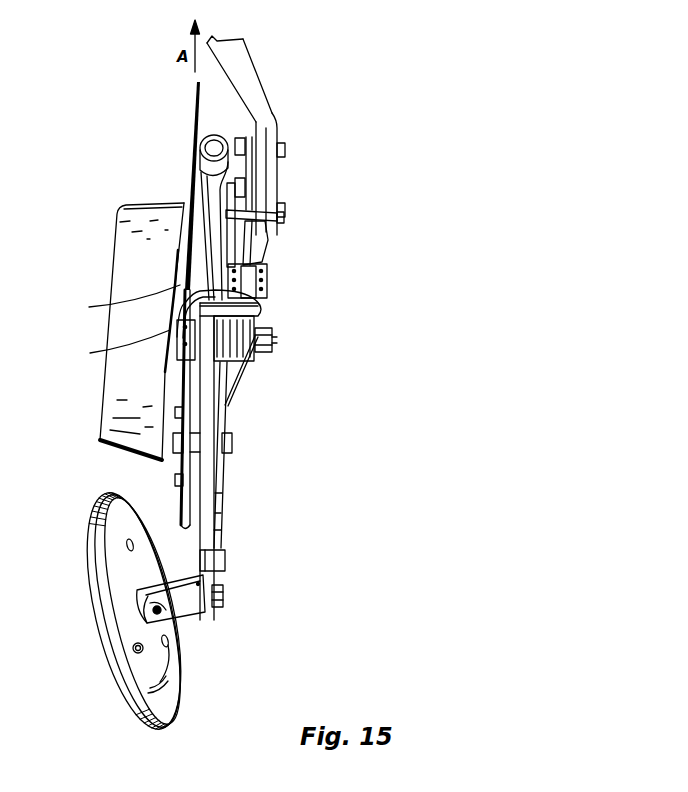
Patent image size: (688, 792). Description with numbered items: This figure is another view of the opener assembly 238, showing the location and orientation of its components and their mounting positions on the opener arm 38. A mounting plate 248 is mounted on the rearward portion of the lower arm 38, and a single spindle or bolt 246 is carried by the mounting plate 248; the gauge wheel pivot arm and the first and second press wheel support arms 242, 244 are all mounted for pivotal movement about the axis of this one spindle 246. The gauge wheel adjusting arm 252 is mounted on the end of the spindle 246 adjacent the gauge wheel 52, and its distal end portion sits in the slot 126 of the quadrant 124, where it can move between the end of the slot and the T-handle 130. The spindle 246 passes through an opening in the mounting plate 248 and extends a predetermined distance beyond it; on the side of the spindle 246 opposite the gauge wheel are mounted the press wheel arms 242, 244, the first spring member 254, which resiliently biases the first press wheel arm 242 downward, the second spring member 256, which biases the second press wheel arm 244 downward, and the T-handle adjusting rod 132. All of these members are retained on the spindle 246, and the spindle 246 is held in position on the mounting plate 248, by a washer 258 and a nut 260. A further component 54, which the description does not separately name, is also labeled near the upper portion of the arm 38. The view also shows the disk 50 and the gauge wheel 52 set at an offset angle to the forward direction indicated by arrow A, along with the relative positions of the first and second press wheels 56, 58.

The lower arm 38 is at (265, 70).
The disk 50 is at (186, 115).
The tubular member 54 is at (232, 131).
The gauge wheel 52 is at (102, 244).
The T-handle 130 is at (279, 219).
The quadrant 124 is at (268, 276).
The slot 126 is at (268, 296).
The T-handle adjusting rod 132 is at (263, 312).
The nut 260 is at (273, 332).
The spindle or bolt 246 is at (274, 347).
The washer 258 is at (254, 360).
The first spring member 254 is at (247, 368).
The first press wheel support arm 242 is at (232, 390).
The second spring member 256 is at (228, 484).
The opener assembly 238 is at (440, 481).
The second press wheel support arm 244 is at (213, 613).
The first press wheel 56 is at (173, 505).
The second press wheel 58 is at (193, 698).
The mounting plate 248 is at (180, 338).
The gauge wheel adjusting arm 252 is at (190, 292).